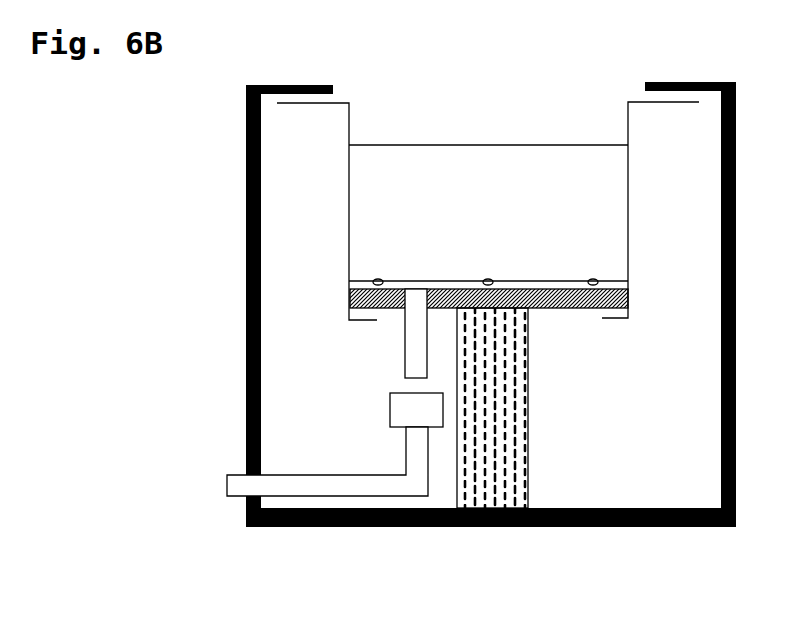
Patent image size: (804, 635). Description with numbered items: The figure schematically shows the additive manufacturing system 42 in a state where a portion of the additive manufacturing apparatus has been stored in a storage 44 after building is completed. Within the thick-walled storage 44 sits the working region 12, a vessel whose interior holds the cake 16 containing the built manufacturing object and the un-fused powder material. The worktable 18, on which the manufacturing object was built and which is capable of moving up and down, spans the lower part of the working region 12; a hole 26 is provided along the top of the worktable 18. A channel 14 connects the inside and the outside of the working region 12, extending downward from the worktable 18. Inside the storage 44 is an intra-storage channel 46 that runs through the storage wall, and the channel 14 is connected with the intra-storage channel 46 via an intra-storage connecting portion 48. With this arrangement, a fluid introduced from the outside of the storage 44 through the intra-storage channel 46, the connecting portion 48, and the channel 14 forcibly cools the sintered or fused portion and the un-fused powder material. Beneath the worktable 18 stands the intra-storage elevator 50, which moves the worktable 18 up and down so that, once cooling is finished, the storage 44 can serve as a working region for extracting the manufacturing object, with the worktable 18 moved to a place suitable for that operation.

The working region 12 is at (628, 113).
The channel 14 is at (405, 325).
The cake containing a manufacturing object 16 is at (573, 263).
The worktable 18 is at (628, 300).
The hole 26 is at (375, 280).
The additive manufacturing system 42 is at (435, 336).
The storage 44 is at (408, 527).
The intra-storage channel 46 is at (232, 477).
The intra-storage connecting portion 48 is at (392, 398).
The intra-storage elevator 50 is at (528, 377).